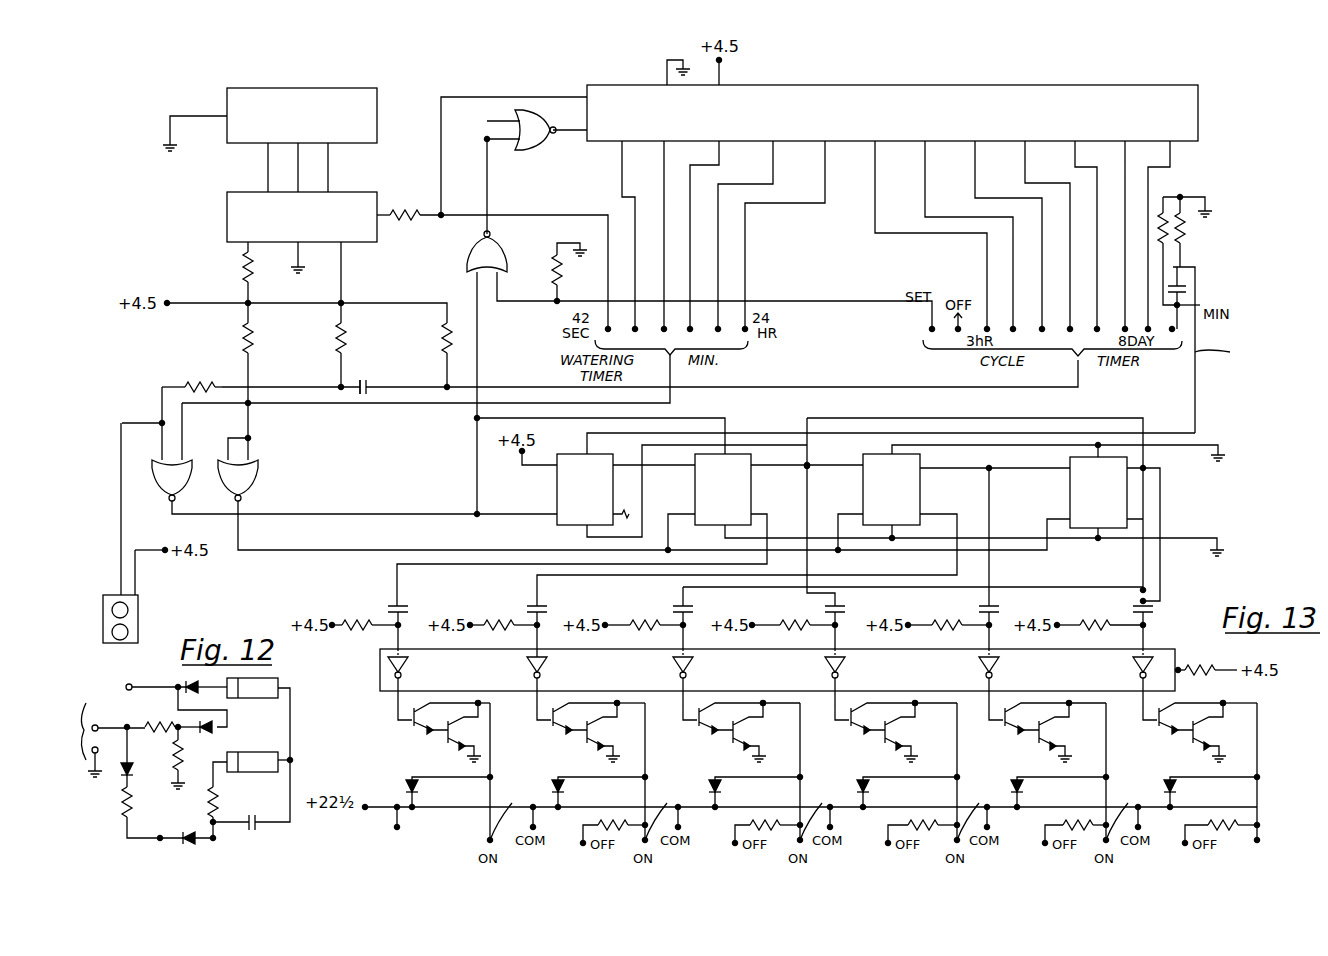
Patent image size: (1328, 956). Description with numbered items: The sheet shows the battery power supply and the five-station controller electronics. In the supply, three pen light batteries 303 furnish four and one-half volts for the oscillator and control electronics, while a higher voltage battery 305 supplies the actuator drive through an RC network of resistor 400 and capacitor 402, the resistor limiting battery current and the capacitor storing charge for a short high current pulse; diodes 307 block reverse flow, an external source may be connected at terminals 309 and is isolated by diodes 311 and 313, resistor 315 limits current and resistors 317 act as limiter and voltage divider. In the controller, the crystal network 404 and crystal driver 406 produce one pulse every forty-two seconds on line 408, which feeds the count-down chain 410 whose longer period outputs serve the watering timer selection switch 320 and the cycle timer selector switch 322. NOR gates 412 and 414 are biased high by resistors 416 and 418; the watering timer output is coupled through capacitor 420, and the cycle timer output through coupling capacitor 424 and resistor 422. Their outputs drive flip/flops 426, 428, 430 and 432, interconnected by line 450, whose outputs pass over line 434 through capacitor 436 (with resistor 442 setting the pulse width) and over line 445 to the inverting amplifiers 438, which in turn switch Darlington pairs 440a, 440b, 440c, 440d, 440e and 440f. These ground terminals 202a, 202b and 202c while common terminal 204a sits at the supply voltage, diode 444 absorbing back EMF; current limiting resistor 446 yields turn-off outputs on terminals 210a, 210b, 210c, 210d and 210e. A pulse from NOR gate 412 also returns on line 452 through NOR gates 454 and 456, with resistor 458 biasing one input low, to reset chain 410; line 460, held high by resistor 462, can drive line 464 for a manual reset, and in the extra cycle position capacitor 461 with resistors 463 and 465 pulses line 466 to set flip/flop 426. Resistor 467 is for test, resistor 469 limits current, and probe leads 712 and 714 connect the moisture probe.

In FIG. 13, the crystal and associated network 404 is at (377, 96).
In FIG. 13, the crystal driver 406 is at (377, 200).
In FIG. 13, the line 408 is at (545, 215).
In FIG. 13, the count-down chain 410 is at (1198, 100).
In FIG. 13, the NOR gate 412 is at (162, 500).
In FIG. 13, the NOR gate 414 is at (255, 480).
In FIG. 13, the resistor 416 is at (250, 340).
In FIG. 13, the resistor 418 is at (343, 338).
In FIG. 13, the capacitor 420 is at (368, 396).
In FIG. 13, the resistor 422 is at (198, 382).
In FIG. 13, the coupling capacitor 424 is at (358, 396).
In FIG. 13, the flip/flop 426 is at (556, 490).
In FIG. 13, the flip/flop 428 is at (694, 494).
In FIG. 13, the flip/flop 430 is at (862, 496).
In FIG. 13, the flip/flop 432 is at (1068, 492).
In FIG. 13, the line 434 is at (396, 575).
In FIG. 13, the capacitor 436 is at (405, 608).
In FIG. 13, the amplifiers 438 is at (380, 660).
In FIG. 13, the Darlington pair 440a is at (412, 720).
In FIG. 13, the Darlington pair 440b is at (551, 722).
In FIG. 13, the Darlington pair 440c is at (697, 722).
In FIG. 13, the Darlington pair 440d is at (849, 724).
In FIG. 13, the Darlington pair 440e is at (1003, 724).
In FIG. 13, the Darlington pair 440f is at (1157, 724).
In FIG. 13, the resistor 442 is at (360, 605).
In FIG. 13, the diode 444 is at (408, 784).
In FIG. 13, the line 445 is at (806, 602).
In FIG. 13, the current limiting resistor 446 is at (624, 818).
In FIG. 13, the line 450 is at (945, 418).
In FIG. 13, the line 452 is at (476, 462).
In FIG. 13, the NOR gate 454 is at (470, 252).
In FIG. 13, the NOR gate 456 is at (540, 108).
In FIG. 13, the resistor 458 is at (555, 260).
In FIG. 13, the line 460 is at (876, 387).
In FIG. 13, the capacitor 461 is at (1187, 288).
In FIG. 13, the resistor 462 is at (446, 335).
In FIG. 13, the resistor 463 is at (1185, 238).
In FIG. 13, the line 464 is at (838, 301).
In FIG. 13, the resistor 465 is at (1160, 215).
In FIG. 13, the line 466 is at (1230, 350).
In FIG. 13, the resistor 467 is at (398, 228).
In FIG. 13, the current limiting resistor 469 is at (1190, 672).
In FIG. 13, the probe lead 712 is at (119, 498).
In FIG. 13, the probe lead 714 is at (140, 578).
In FIG. 13, the terminal 202a is at (513, 811).
In FIG. 13, the terminal 202b is at (670, 811).
In FIG. 13, the terminal 202c is at (820, 811).
In FIG. 13, the common terminal 204a is at (380, 824).
In FIG. 13, the terminal 210a is at (581, 845).
In FIG. 13, the terminal 210b is at (733, 845).
In FIG. 13, the terminal 210c is at (886, 845).
In FIG. 13, the terminal 210d is at (1043, 843).
In FIG. 13, the terminal 210e is at (1183, 845).
In FIG. 13, the watering timer selection switch 320 is at (745, 351).
In FIG. 13, the cycle timer selector switch 322 is at (968, 356).
In FIG. 12, the pen light batteries 303 is at (280, 688).
In FIG. 12, the battery 305 is at (243, 738).
In FIG. 12, the diodes 307 is at (192, 681).
In FIG. 12, the terminals 309 is at (100, 728).
In FIG. 12, the diode 311 is at (122, 780).
In FIG. 12, the diode 313 is at (212, 735).
In FIG. 12, the resistor 315 is at (124, 818).
In FIG. 12, the resistors 317 is at (157, 720).
In FIG. 12, the resistor 400 is at (211, 798).
In FIG. 12, the capacitor 402 is at (268, 818).